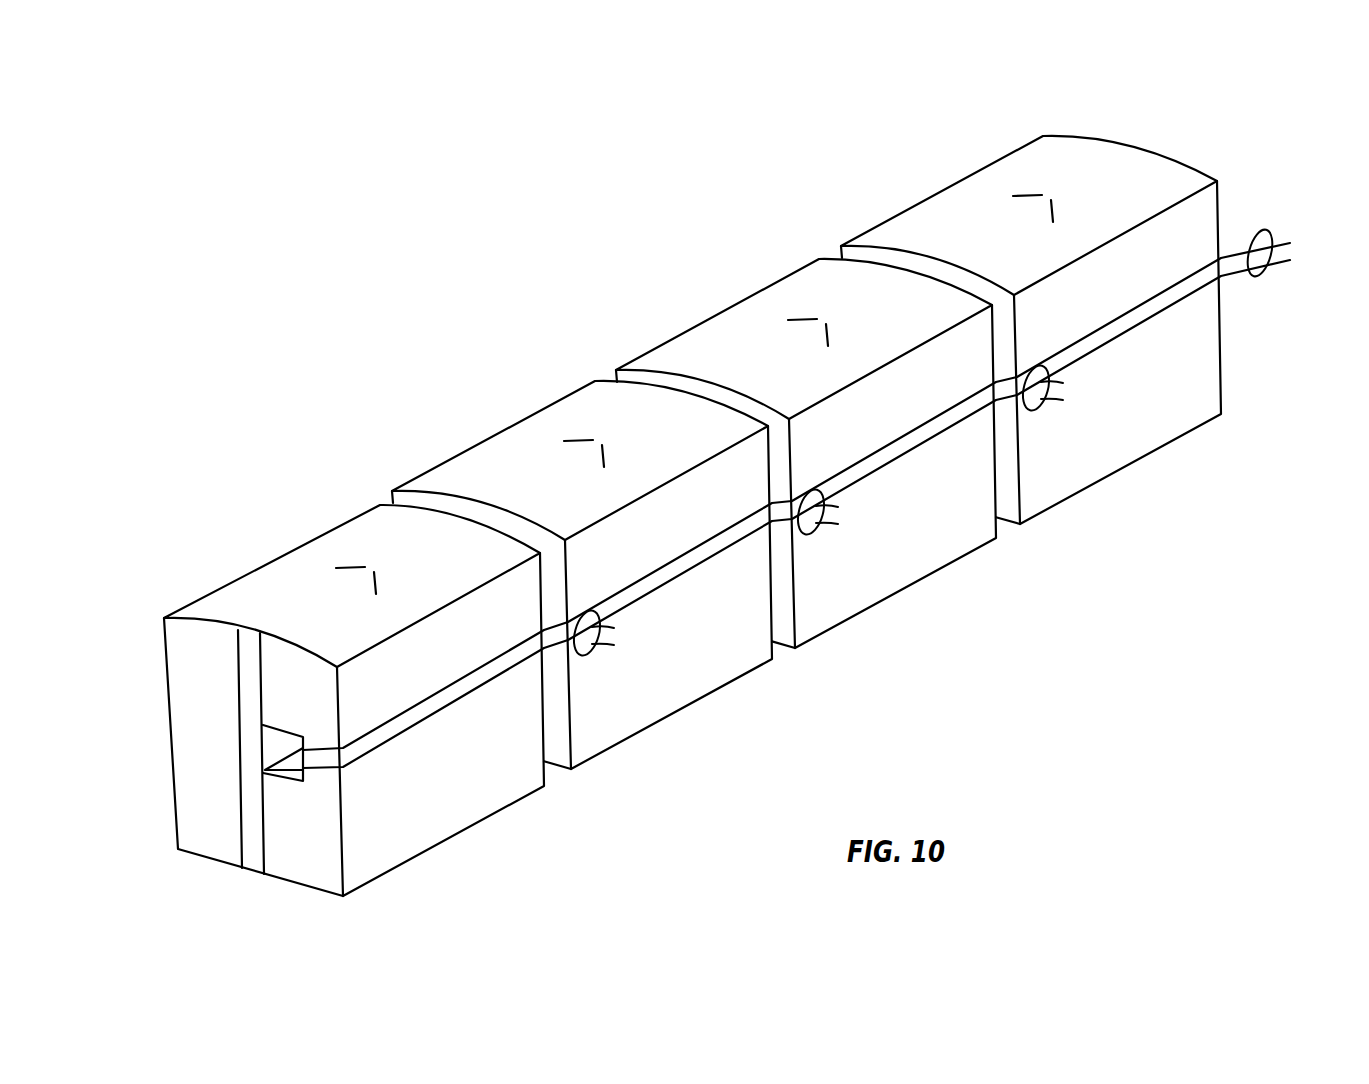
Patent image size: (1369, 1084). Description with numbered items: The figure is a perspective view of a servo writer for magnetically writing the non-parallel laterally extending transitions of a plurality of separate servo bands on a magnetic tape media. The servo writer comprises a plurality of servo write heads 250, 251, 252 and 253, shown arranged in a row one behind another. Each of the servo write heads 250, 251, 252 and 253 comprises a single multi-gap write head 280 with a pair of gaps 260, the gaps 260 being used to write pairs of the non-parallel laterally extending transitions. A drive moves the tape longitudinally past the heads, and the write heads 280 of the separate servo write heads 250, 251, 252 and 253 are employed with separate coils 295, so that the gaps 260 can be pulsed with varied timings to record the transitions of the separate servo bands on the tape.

The servo write head 250 is at (241, 530).
The servo write head 251 is at (469, 403).
The servo write head 252 is at (693, 282).
The servo write head 253 is at (918, 158).
The gaps 260 is at (351, 566).
The multi-gap write head 280 is at (172, 823).
The coils 295 is at (583, 657).